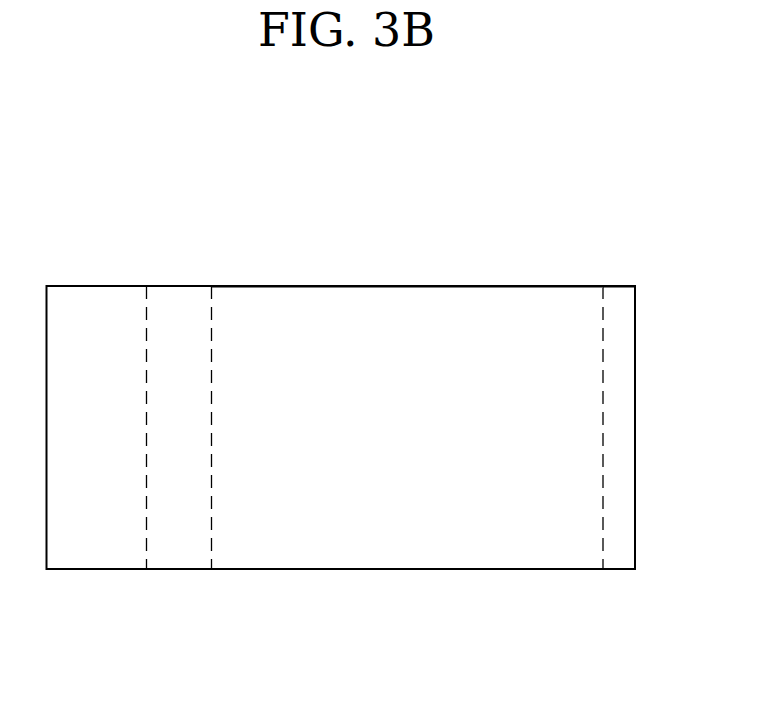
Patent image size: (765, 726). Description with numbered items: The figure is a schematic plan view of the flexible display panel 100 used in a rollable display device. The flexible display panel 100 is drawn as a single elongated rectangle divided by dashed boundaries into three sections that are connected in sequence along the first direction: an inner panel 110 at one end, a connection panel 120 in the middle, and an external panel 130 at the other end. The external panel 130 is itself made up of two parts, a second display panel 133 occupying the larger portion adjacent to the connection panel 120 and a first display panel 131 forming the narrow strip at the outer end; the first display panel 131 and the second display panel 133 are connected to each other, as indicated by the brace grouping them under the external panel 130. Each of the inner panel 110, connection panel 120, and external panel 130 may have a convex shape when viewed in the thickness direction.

The flexible display panel 100 is at (470, 176).
The inner panel 110 is at (107, 308).
The connection panel 120 is at (190, 308).
The external panel 130 is at (647, 219).
The first display panel 131 is at (624, 308).
The second display panel 133 is at (511, 308).